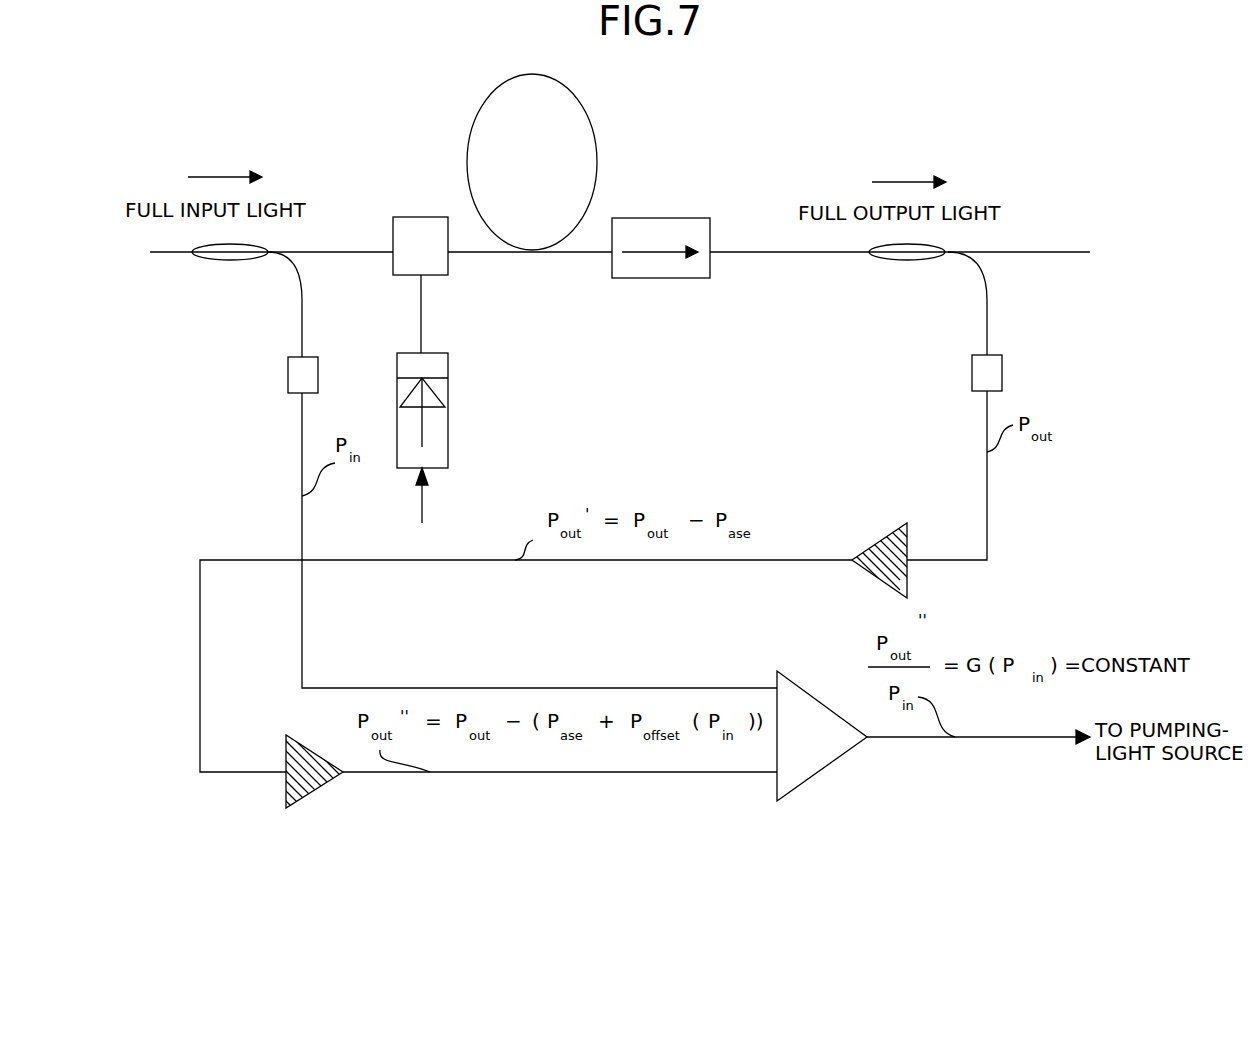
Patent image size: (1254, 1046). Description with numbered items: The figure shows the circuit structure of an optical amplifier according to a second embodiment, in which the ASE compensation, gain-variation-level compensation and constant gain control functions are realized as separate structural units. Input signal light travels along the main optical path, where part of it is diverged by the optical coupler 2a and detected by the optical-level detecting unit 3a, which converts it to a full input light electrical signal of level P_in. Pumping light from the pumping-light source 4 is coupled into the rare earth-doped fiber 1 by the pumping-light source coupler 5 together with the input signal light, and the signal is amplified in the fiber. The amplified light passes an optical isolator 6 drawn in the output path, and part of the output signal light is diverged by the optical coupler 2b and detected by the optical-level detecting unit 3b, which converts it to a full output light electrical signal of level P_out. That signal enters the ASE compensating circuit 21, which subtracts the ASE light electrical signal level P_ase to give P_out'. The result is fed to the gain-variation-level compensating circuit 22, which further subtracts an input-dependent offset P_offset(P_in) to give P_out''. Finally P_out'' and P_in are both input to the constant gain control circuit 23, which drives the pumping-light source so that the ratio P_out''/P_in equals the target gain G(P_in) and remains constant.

The rare earth-doped fiber 1 is at (583, 168).
The optical coupler 2a is at (220, 255).
The optical coupler 2b is at (896, 258).
The optical-level detecting unit 3a is at (295, 373).
The optical-level detecting unit 3b is at (980, 365).
The pumping-light source 4 is at (436, 430).
The pumping-light source coupler 5 is at (425, 243).
The optical isolator 6 is at (690, 228).
The ASE compensating circuit 21 is at (860, 585).
The gain-variation-level compensating circuit 22 is at (287, 778).
The constant gain control circuit 23 is at (818, 750).